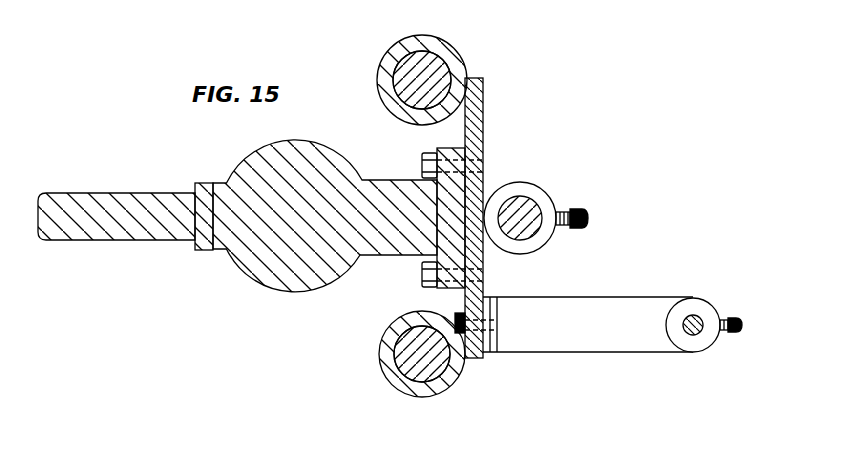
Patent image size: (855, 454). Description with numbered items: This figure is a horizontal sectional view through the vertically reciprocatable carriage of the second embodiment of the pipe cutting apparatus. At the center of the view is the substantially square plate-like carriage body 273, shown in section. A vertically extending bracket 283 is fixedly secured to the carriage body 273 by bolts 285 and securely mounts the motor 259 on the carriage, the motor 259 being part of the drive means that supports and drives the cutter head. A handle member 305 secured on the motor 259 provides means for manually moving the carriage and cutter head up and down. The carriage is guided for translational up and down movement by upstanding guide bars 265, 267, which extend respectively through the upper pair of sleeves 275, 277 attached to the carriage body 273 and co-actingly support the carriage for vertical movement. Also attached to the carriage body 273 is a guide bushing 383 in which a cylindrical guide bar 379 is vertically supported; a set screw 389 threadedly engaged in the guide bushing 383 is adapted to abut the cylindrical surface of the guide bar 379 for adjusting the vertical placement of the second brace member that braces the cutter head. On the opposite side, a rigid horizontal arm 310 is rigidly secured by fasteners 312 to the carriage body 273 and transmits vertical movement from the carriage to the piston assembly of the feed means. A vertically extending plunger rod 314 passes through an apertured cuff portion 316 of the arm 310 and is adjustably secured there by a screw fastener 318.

The handle member 305 is at (92, 196).
The motor 259 is at (226, 171).
The bracket 283 is at (404, 200).
The carriage body 273 is at (476, 134).
The bolts 285 is at (422, 164).
The guide bar 267 is at (400, 85).
The sleeve 277 is at (395, 112).
The sleeve 275 is at (395, 383).
The guide bar 265 is at (405, 350).
The guide bushing 383 is at (532, 242).
The cylindrical guide bar 379 is at (526, 208).
The set screw 389 is at (583, 210).
The horizontal arm 310 is at (620, 310).
The cuff portion 316 is at (700, 340).
The plunger rod 314 is at (698, 318).
The screw fastener 318 is at (743, 325).
The fasteners 312 is at (456, 314).